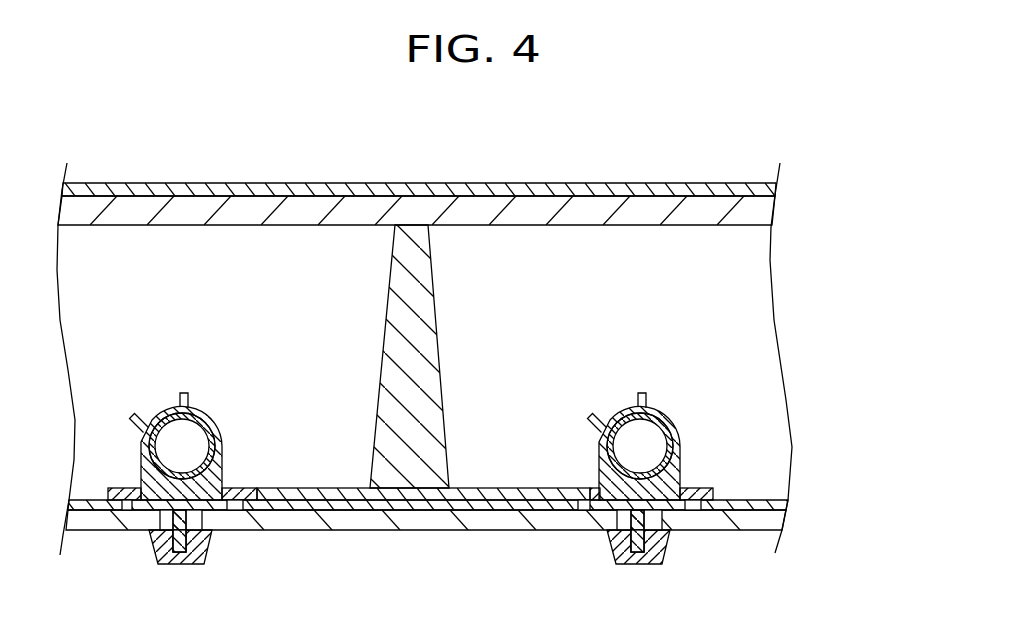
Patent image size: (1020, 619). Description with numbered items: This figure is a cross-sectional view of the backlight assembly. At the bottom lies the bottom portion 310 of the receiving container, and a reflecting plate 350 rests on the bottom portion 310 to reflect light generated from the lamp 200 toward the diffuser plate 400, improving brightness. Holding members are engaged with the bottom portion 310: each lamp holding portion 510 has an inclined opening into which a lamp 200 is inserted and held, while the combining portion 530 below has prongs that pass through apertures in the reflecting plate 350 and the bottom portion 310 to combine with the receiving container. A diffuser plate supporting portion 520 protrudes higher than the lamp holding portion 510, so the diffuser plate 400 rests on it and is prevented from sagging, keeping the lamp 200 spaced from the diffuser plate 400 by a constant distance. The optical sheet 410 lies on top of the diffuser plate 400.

The lamp 200 is at (667, 418).
The bottom portion 310 is at (778, 523).
The reflecting plate 350 is at (778, 505).
The diffuser plate 400 is at (770, 212).
The optical sheet 410 is at (772, 186).
The lamp holding portion 510 is at (678, 456).
The diffuser plate supporting portion 520 is at (436, 445).
The combining portion 530 is at (668, 551).